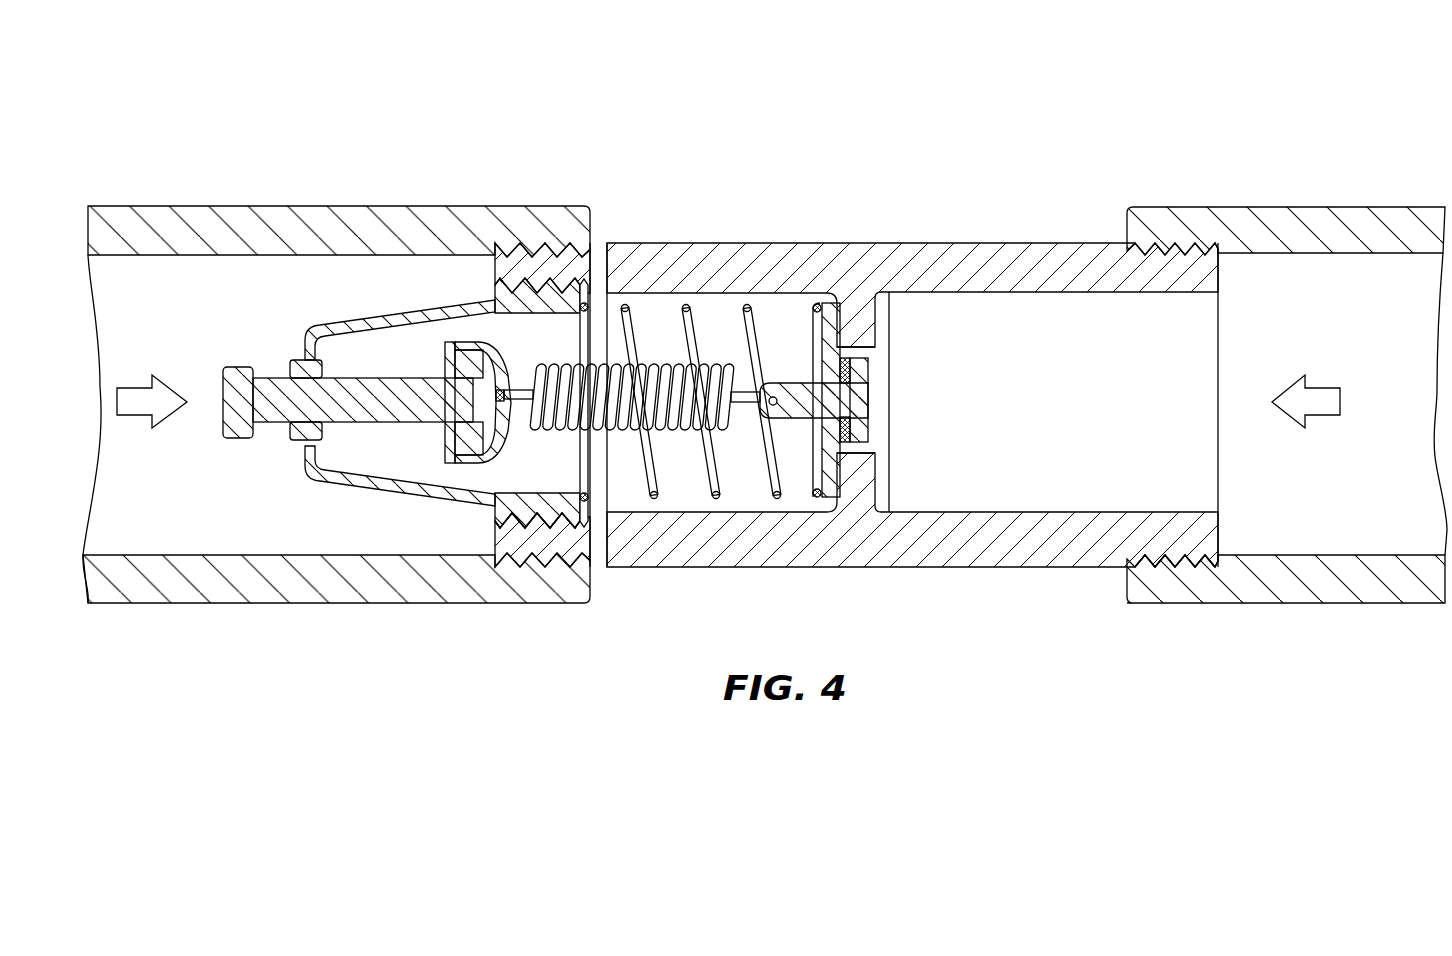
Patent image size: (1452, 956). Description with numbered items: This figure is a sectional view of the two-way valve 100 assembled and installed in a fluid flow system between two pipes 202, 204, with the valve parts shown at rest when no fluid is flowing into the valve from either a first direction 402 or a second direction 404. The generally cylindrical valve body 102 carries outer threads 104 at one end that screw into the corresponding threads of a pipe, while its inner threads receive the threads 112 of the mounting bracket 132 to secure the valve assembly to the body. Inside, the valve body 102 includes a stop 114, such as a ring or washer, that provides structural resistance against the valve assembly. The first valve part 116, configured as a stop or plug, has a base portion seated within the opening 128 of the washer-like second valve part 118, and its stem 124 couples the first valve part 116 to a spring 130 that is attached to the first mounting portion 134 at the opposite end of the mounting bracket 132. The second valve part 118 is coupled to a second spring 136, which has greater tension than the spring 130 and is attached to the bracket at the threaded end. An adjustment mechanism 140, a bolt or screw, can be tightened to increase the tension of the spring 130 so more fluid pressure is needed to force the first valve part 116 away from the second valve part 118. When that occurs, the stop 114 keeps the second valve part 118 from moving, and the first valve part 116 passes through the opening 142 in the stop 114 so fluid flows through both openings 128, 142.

The two-way valve 100 is at (681, 155).
The valve body 102 is at (550, 566).
The outer threads 104 is at (1183, 562).
The threads 112 is at (525, 518).
The stop 114 is at (868, 476).
The first valve part 116 is at (858, 358).
The second valve part 118 is at (828, 300).
The stem 124 is at (797, 420).
The opening 128 is at (810, 378).
The spring 130 is at (627, 432).
The mounting bracket 132 is at (383, 480).
The first mounting portion 134 is at (515, 360).
The spring 136 is at (703, 470).
The adjustment mechanism 140 is at (235, 440).
The opening 142 is at (868, 448).
The pipe 202 is at (1312, 213).
The pipe 204 is at (318, 214).
The first direction 402 is at (136, 398).
The second direction 404 is at (1322, 398).